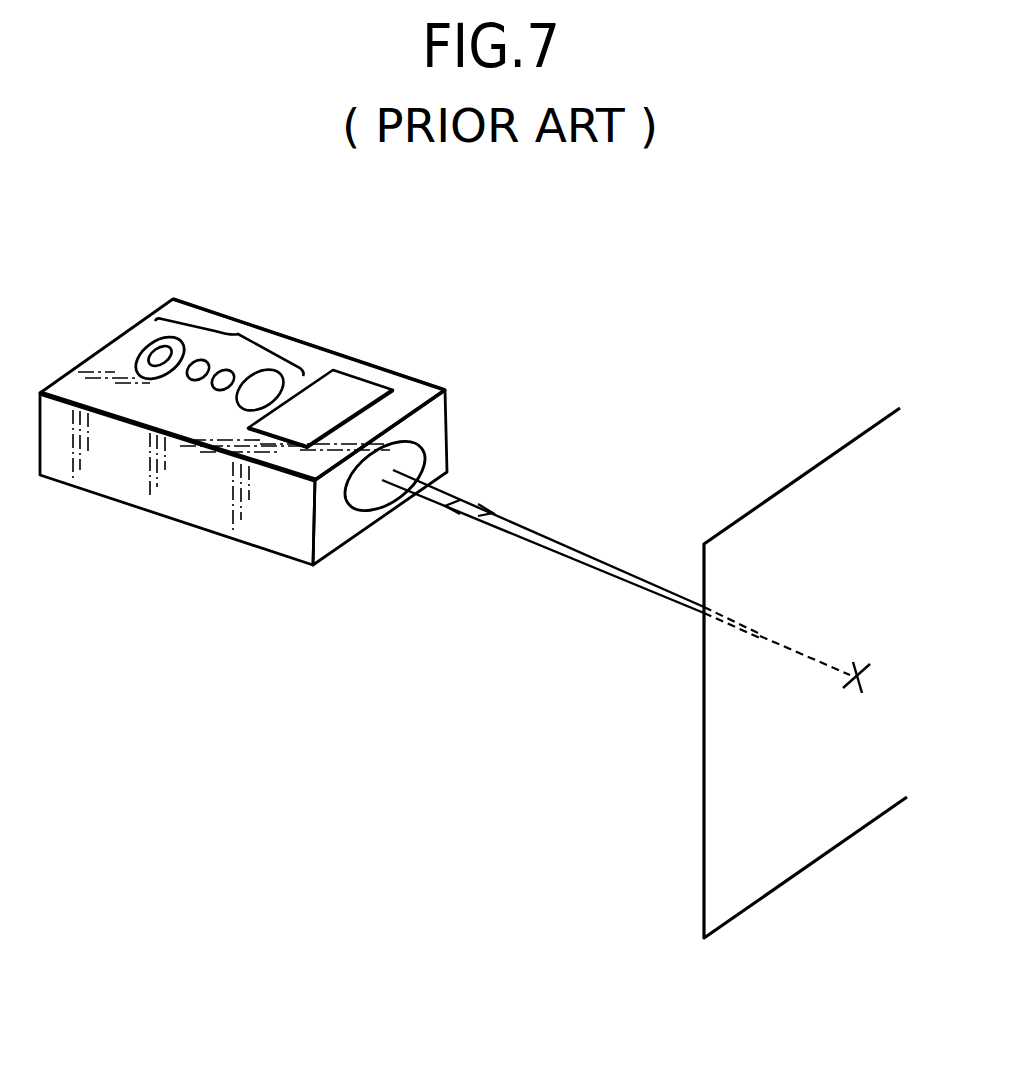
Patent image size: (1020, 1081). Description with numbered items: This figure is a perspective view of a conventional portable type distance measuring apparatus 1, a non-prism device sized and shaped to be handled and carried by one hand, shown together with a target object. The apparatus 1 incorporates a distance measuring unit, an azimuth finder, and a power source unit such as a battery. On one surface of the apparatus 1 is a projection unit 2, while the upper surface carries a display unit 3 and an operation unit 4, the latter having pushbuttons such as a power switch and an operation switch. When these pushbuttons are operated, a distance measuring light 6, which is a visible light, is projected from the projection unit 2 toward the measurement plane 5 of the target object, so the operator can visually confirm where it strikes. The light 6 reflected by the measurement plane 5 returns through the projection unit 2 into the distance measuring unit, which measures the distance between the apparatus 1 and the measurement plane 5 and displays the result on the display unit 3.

The portable type distance measuring apparatus 1 is at (112, 500).
The projection unit 2 is at (370, 498).
The display unit 3 is at (373, 387).
The operation unit 4 is at (236, 330).
The measurement plane 5 is at (704, 795).
The distance measuring light 6 is at (575, 549).